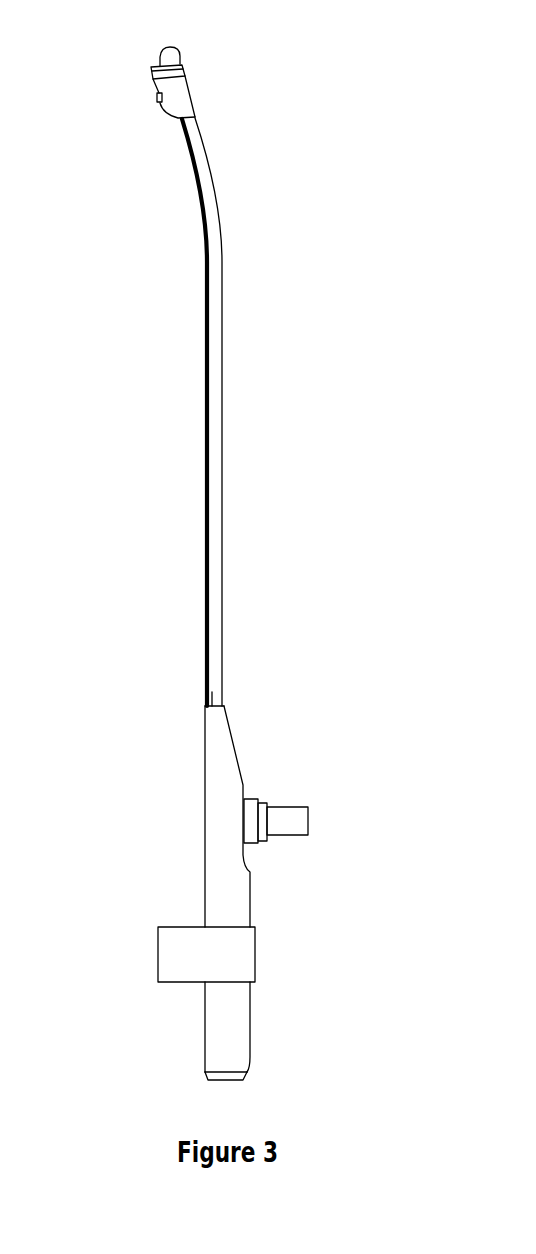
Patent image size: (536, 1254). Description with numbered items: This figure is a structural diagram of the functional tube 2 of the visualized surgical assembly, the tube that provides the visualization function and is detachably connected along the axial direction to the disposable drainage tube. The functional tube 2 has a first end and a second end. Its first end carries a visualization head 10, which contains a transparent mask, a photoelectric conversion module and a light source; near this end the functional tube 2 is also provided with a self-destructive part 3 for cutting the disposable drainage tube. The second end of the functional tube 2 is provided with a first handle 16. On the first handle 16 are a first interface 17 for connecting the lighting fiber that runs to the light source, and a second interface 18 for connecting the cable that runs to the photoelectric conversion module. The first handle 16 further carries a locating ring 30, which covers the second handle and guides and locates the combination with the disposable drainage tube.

The self-destructive part 3 is at (159, 96).
The visualization head 10 is at (252, 56).
The functional tube 2 is at (307, 373).
The first handle 16 is at (298, 722).
The first interface 17 is at (378, 778).
The locating ring 30 is at (195, 953).
The second interface 18 is at (357, 1000).